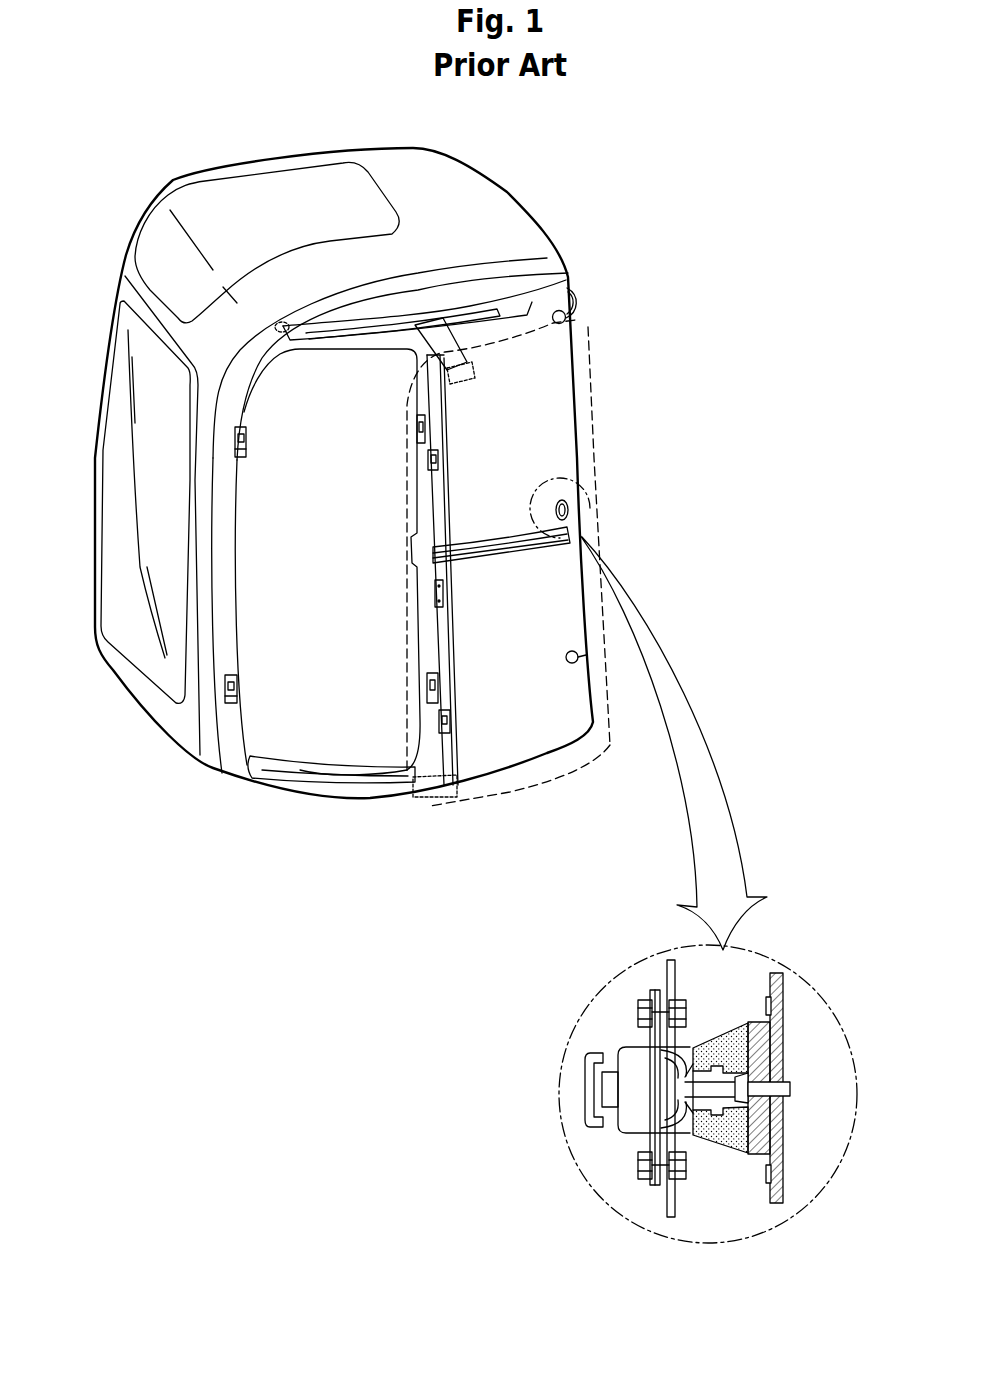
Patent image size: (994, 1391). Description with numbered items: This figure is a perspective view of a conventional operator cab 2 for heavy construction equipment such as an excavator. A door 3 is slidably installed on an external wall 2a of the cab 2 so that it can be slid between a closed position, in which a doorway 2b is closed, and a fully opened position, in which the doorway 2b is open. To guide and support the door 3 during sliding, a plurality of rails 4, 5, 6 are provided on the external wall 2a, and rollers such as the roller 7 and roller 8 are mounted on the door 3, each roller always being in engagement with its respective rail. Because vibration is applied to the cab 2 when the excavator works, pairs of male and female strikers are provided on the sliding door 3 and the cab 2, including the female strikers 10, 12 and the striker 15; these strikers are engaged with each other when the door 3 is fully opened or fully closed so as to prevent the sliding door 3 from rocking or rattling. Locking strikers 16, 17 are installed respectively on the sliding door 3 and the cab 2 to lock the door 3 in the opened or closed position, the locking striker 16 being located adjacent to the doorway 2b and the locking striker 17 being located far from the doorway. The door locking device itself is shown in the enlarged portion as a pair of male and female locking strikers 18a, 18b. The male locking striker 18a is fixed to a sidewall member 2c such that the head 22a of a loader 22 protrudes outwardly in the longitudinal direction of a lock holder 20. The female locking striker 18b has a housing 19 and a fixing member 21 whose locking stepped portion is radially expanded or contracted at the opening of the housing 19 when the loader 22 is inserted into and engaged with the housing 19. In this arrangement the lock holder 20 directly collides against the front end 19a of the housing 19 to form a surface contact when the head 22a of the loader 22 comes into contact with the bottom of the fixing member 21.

The cab 2 is at (470, 187).
The external wall 2a is at (327, 350).
The doorway 2b is at (296, 752).
The sidewall member 2c is at (785, 994).
The door 3 is at (590, 325).
The rail 4 is at (460, 317).
The rail 5 is at (367, 783).
The rail 6 is at (433, 553).
The roller 7 is at (440, 357).
The roller 8 is at (430, 800).
The female striker 10 is at (247, 443).
The female striker 12 is at (417, 426).
The striker 15 is at (567, 316).
The locking striker 16 is at (433, 600).
The locking striker 17 is at (570, 498).
The male locking striker 18a is at (726, 1222).
The female locking striker 18b is at (606, 1149).
The housing 19 is at (623, 1050).
The front end of housing 19a is at (697, 1060).
The lock holder 20 is at (730, 1147).
The fixing member 21 is at (700, 1147).
The loader 22 is at (790, 1090).
The head of loader 22a is at (668, 1068).